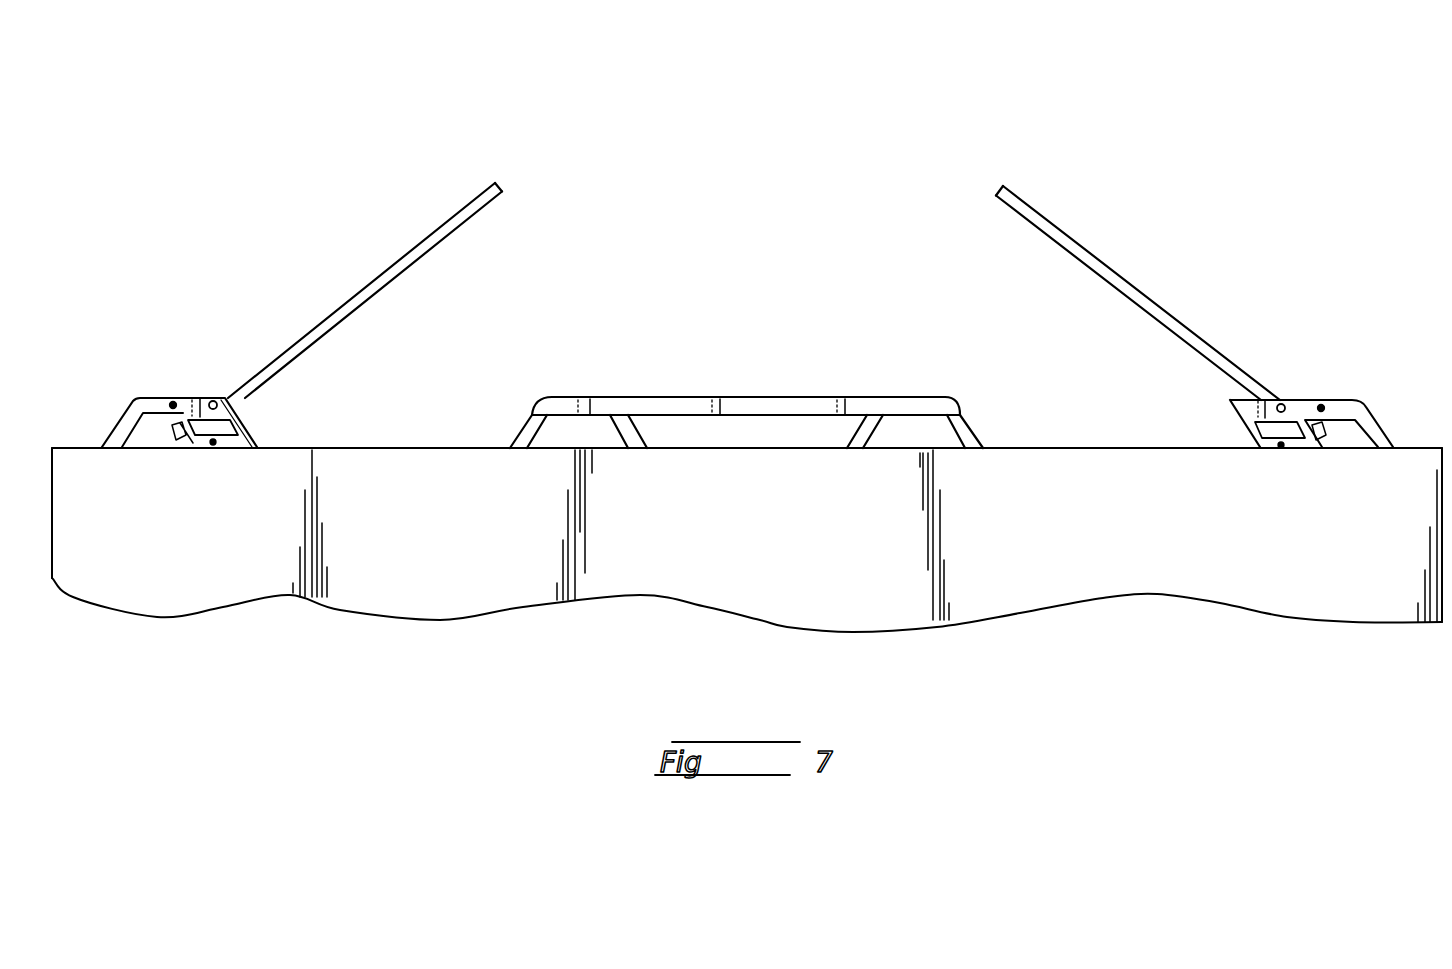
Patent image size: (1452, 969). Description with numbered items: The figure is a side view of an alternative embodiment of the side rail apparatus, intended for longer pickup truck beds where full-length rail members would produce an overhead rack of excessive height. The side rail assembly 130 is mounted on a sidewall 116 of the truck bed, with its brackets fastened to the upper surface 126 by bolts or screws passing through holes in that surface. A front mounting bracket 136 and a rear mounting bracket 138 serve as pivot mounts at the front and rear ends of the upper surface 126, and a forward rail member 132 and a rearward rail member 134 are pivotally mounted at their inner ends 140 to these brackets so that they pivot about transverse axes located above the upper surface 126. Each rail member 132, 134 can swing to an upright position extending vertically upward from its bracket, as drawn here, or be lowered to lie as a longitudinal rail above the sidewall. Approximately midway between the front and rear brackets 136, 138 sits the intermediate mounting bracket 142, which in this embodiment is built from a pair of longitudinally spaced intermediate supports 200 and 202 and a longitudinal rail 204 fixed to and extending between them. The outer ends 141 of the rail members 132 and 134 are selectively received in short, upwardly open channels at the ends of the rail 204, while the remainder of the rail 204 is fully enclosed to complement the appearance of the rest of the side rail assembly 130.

The sidewall 116 is at (792, 541).
The upper surface 126 is at (380, 450).
The side rail assembly 130 is at (690, 177).
The forward rail member 132 is at (368, 271).
The rearward rail member 134 is at (1131, 277).
The front mounting bracket 136 is at (160, 395).
The rear mounting bracket 138 is at (1343, 398).
The inner end 140 is at (228, 395).
The outer end 141 is at (485, 198).
The intermediate mounting bracket 142 is at (747, 373).
The intermediate support 200 is at (516, 423).
The intermediate support 202 is at (979, 427).
The rail 204 is at (757, 407).